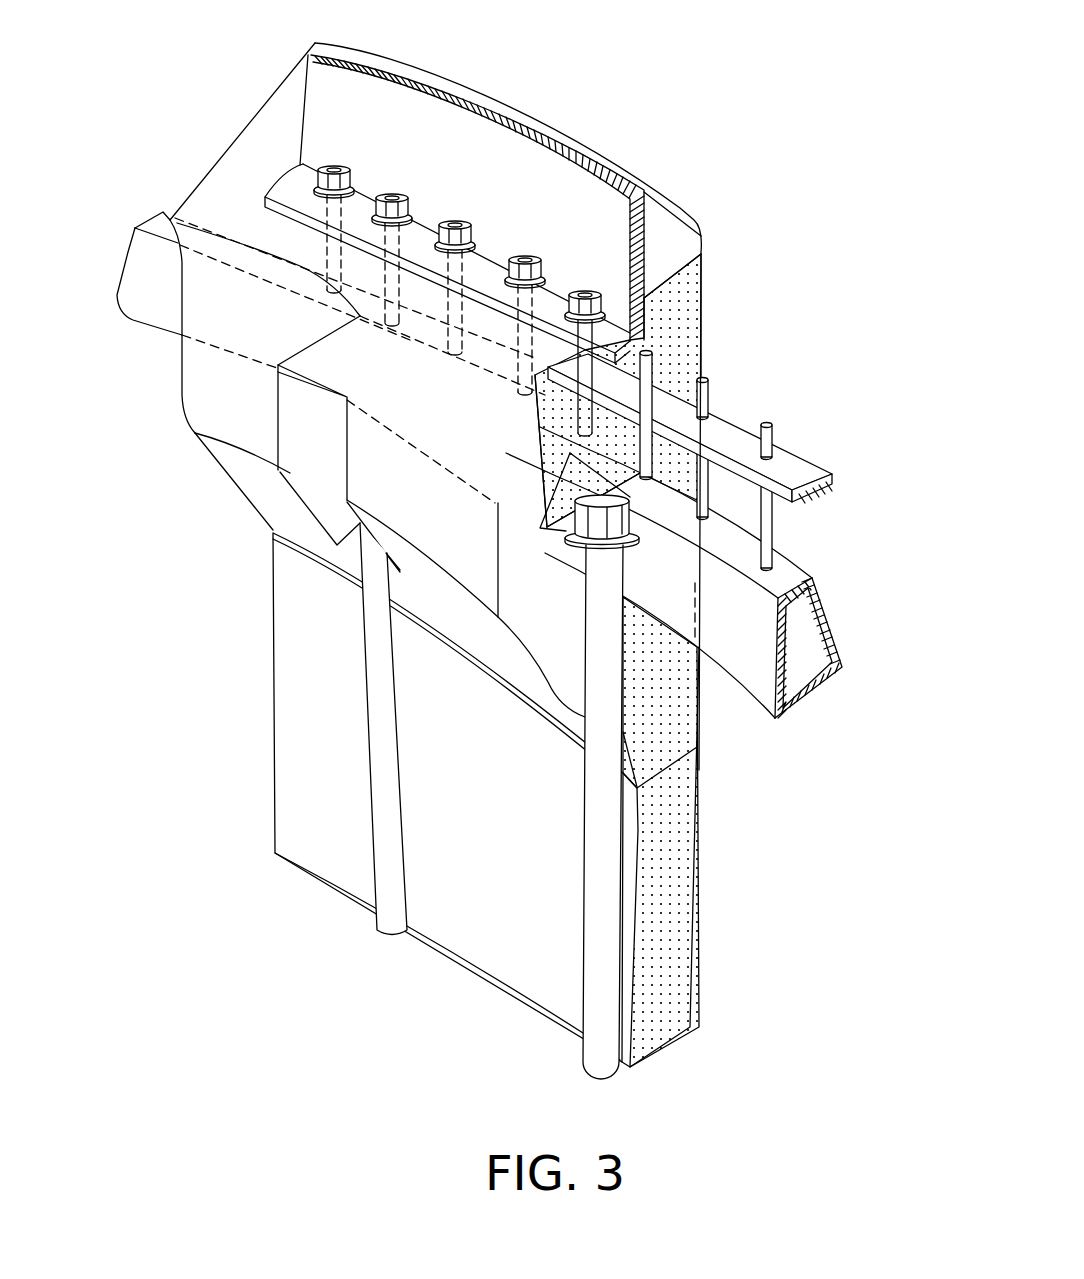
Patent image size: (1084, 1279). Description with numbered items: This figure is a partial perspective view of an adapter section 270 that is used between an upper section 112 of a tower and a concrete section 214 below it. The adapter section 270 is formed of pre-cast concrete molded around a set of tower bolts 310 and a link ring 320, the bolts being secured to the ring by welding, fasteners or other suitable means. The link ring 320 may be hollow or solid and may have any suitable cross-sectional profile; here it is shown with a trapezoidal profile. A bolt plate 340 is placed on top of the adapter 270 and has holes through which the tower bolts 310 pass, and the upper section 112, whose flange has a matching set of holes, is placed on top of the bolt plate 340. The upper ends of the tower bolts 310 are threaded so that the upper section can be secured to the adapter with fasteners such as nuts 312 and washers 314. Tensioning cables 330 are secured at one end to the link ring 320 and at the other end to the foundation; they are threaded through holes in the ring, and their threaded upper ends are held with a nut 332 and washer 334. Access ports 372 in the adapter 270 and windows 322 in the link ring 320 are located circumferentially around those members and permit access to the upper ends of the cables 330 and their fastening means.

The upper section 112 is at (473, 107).
The concrete section 214 is at (680, 982).
The adapter section 270 is at (188, 395).
The tower bolts 310 is at (713, 461).
The nuts 312 is at (583, 292).
The washers 314 is at (567, 300).
The link ring 320 is at (833, 613).
The windows 322 is at (600, 550).
The tensioning cables 330 is at (387, 918).
The nut 332 is at (538, 462).
The washer 334 is at (508, 508).
The bolt plate 340 is at (812, 472).
The access ports 372 is at (303, 470).